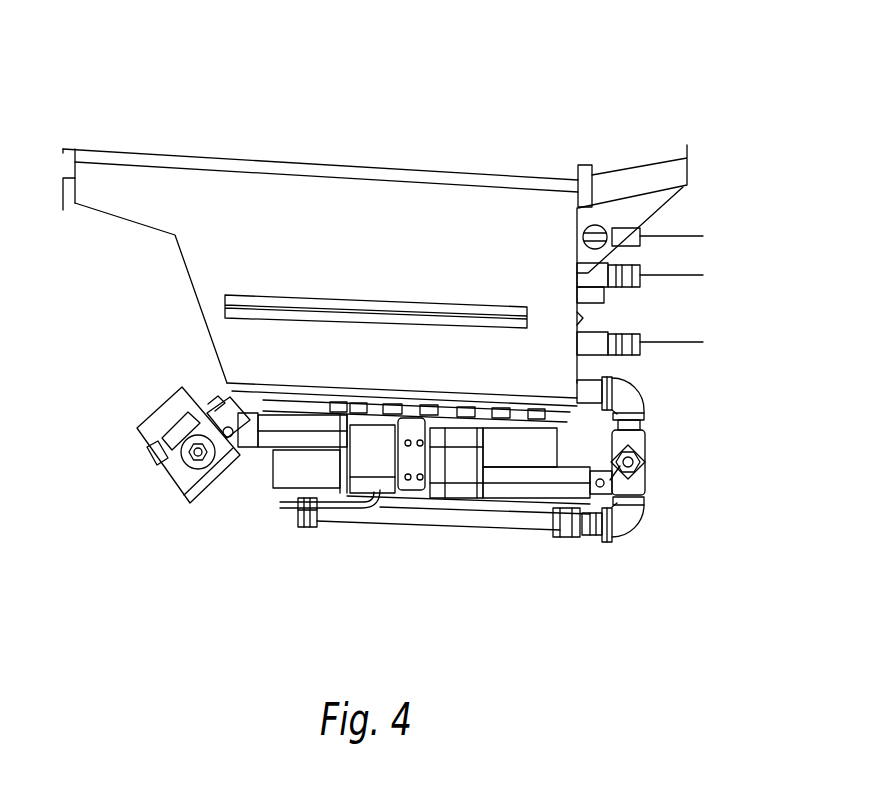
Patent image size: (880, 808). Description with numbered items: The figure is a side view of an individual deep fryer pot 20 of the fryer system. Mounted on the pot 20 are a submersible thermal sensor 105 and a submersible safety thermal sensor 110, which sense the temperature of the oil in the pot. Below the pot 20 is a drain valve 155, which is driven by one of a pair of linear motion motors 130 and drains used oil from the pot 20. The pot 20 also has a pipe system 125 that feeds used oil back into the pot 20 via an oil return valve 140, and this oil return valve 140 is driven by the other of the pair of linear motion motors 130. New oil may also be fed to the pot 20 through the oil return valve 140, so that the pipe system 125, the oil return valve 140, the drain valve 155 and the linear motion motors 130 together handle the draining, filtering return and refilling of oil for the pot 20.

The deep fryer pot 20 is at (466, 101).
The submersible thermal sensor 105 is at (640, 335).
The submersible safety thermal sensor 110 is at (640, 268).
The pipe system 125 is at (531, 520).
The linear motion motors 130 is at (517, 483).
The oil return valve 140 is at (645, 450).
The drain valve 155 is at (148, 443).